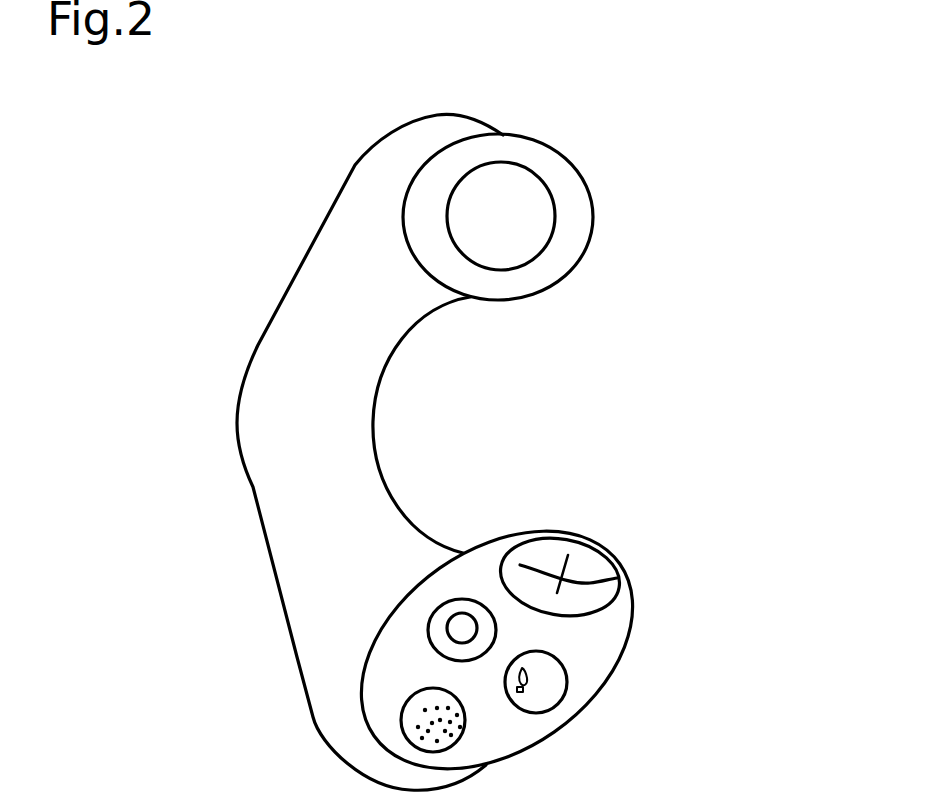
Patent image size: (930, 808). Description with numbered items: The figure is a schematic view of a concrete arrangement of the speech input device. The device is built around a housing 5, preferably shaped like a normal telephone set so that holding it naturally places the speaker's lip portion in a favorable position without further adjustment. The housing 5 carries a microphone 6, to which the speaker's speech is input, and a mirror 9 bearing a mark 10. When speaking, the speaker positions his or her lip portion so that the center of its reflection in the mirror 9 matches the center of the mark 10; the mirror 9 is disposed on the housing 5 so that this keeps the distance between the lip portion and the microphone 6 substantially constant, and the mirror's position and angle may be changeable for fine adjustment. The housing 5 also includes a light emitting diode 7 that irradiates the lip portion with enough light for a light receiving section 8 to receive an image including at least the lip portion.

The housing 5 is at (253, 487).
The microphone 6 is at (413, 717).
The light emitting diode 7 is at (455, 610).
The light receiving section 8 is at (550, 682).
The mirror 9 is at (588, 563).
The mark 10 is at (617, 578).